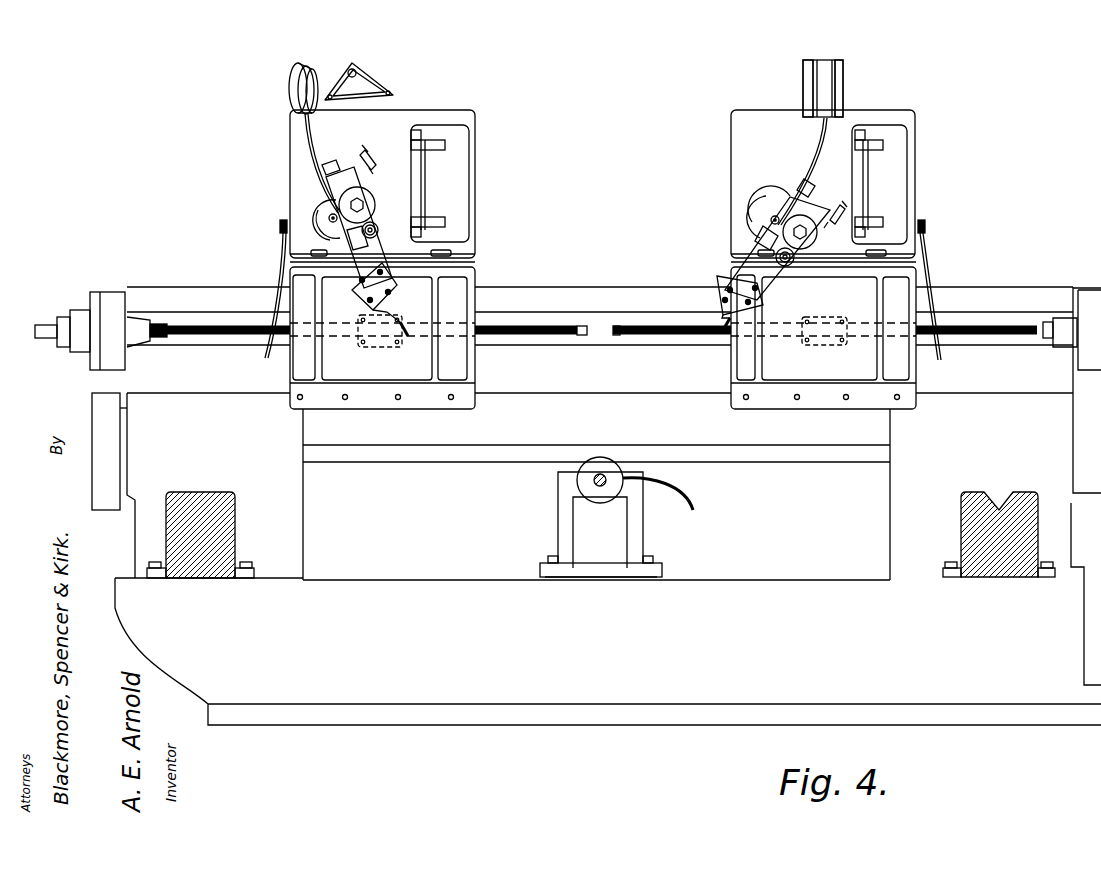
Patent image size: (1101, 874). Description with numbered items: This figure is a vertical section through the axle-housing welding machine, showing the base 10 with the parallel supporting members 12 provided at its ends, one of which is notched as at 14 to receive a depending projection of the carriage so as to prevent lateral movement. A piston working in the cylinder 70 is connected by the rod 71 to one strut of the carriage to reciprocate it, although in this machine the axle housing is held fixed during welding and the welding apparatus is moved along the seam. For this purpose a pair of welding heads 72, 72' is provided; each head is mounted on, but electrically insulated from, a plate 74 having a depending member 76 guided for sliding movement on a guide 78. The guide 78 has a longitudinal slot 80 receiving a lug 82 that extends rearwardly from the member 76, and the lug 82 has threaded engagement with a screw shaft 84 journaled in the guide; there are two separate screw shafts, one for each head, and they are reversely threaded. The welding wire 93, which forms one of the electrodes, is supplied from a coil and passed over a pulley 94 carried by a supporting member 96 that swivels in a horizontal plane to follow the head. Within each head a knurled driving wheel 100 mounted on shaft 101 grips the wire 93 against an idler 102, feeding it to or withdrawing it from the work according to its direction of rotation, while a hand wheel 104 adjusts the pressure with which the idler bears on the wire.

The base 10 is at (192, 632).
The supporting member 12 is at (170, 541).
The notch 14 is at (1015, 505).
The cylinder 70 is at (580, 466).
The rod 71 is at (598, 488).
The welding head 72 is at (846, 179).
The welding head 72' is at (408, 177).
The plate 74 is at (900, 278).
The depending member 76 is at (454, 399).
The guide 78 is at (537, 290).
The longitudinal slot 80 is at (505, 312).
The lug 82 is at (402, 345).
The screw shaft 84 is at (672, 326).
The welding wire 93 is at (312, 158).
The pulley 94 is at (296, 78).
The supporting member 96 is at (385, 73).
The knurled driving wheel 100 is at (328, 212).
The shaft 101 is at (330, 220).
The idler 102 is at (367, 200).
The hand wheel 104 is at (368, 156).